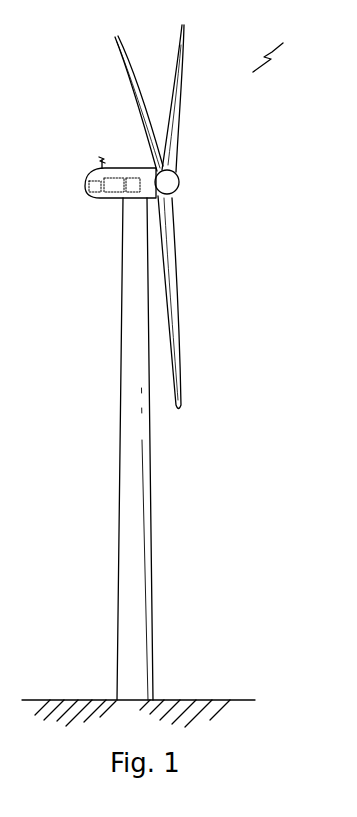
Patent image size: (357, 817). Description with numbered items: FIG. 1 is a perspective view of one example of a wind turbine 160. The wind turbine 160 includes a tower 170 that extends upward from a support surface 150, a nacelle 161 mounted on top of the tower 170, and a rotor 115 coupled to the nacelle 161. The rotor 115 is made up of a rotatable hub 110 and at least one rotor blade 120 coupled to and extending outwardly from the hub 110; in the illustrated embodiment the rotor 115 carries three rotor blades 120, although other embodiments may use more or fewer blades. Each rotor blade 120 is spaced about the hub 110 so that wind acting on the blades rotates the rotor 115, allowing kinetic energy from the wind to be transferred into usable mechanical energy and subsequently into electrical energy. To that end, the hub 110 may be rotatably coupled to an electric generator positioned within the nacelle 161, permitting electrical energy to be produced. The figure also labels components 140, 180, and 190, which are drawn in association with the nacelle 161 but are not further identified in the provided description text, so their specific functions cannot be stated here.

The hub 110 is at (177, 192).
The rotor 115 is at (184, 170).
The rotor blade 120 is at (177, 53).
The controller 140 is at (93, 188).
The support surface 150 is at (75, 698).
The wind turbine 160 is at (286, 52).
The nacelle 161 is at (108, 200).
The tower 170 is at (127, 518).
The generator 180 is at (142, 187).
The gearbox 190 is at (123, 178).